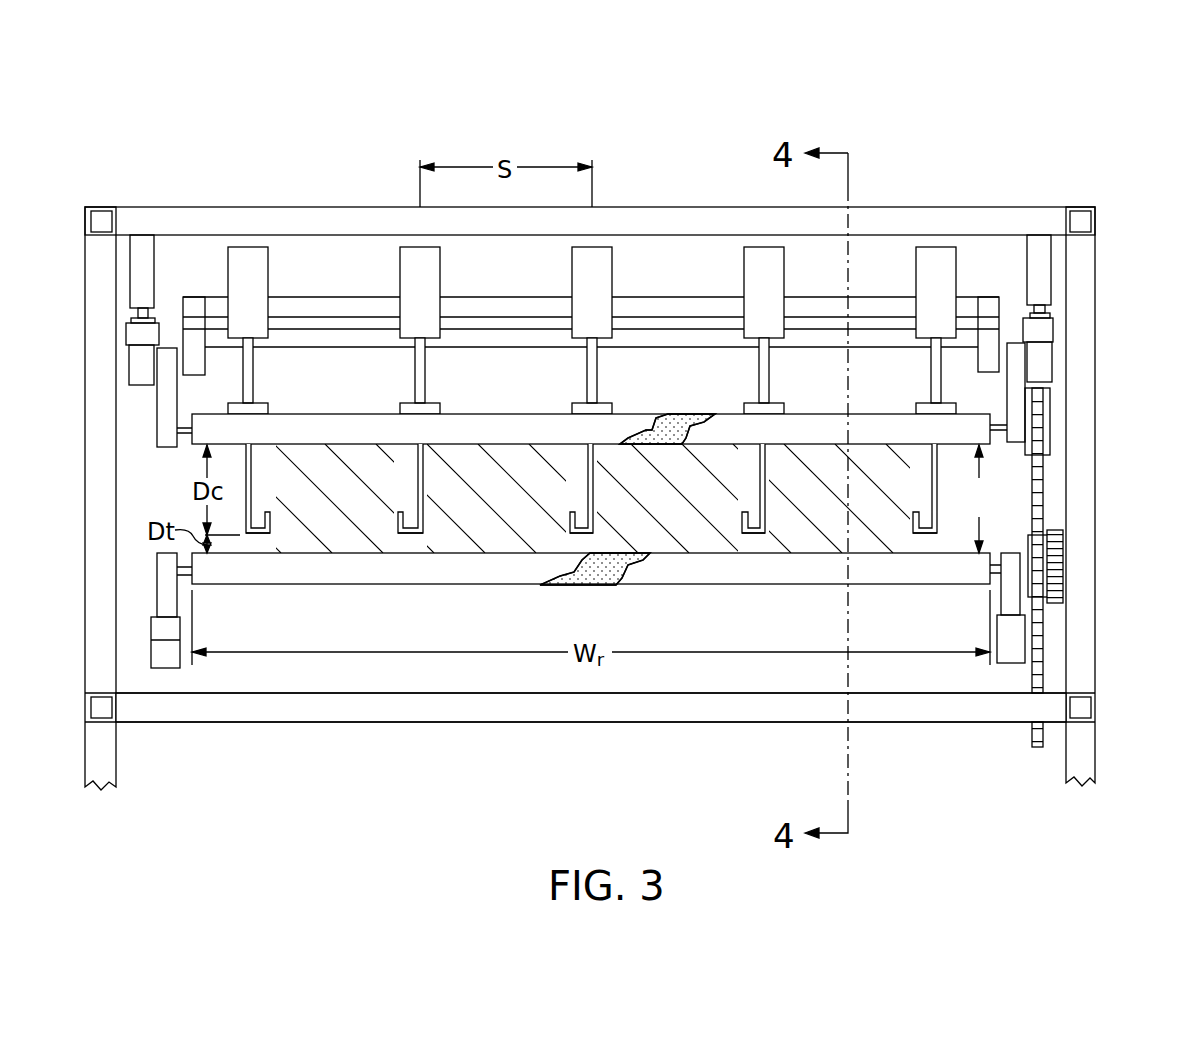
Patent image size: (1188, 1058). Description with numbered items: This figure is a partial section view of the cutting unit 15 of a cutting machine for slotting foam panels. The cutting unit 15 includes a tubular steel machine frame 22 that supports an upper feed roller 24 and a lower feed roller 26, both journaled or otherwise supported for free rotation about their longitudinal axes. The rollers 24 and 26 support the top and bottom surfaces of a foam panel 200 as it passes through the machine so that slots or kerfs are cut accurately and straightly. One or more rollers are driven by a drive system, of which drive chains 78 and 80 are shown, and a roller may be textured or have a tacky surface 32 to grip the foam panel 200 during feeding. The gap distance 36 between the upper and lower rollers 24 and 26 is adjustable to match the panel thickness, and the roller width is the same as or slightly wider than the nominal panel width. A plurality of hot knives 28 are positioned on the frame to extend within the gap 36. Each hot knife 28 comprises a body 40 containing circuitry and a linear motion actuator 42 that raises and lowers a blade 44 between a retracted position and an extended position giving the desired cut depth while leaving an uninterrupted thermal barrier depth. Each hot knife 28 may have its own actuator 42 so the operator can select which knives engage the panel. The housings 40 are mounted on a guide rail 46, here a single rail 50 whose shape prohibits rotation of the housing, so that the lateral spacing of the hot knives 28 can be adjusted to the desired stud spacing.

The cutting unit 15 is at (170, 168).
The machine frame 22 is at (1037, 212).
The upper feed roller 24 is at (500, 426).
The lower feed roller 26 is at (475, 573).
The hot knife 28 is at (260, 537).
The tacky surface 32 is at (676, 425).
The gap distance 36 is at (979, 499).
The body 40 is at (237, 262).
The linear motion actuator 42 is at (254, 372).
The blade 44 is at (251, 472).
The guide rail 46 is at (668, 298).
The single rail 50 is at (643, 308).
The drive chain 78 is at (1040, 487).
The drive chain 80 is at (1053, 573).
The foam panel 200 is at (690, 533).